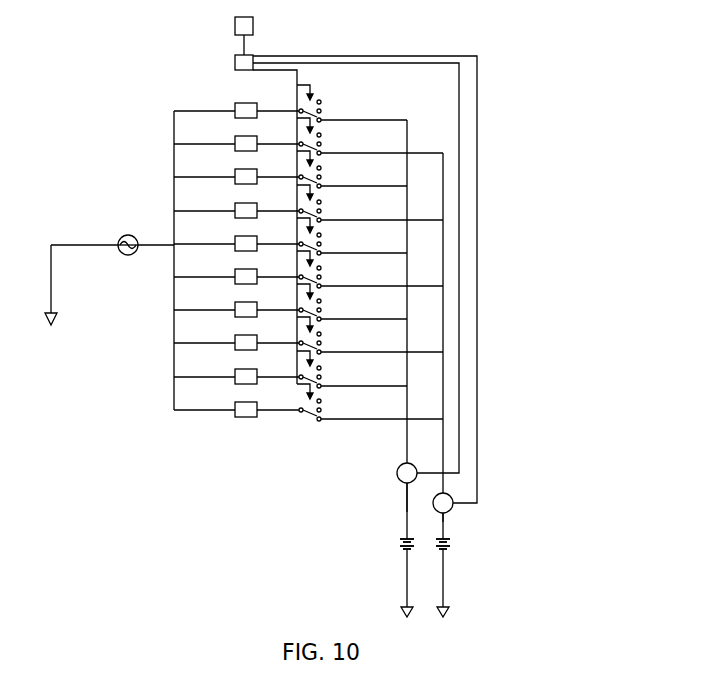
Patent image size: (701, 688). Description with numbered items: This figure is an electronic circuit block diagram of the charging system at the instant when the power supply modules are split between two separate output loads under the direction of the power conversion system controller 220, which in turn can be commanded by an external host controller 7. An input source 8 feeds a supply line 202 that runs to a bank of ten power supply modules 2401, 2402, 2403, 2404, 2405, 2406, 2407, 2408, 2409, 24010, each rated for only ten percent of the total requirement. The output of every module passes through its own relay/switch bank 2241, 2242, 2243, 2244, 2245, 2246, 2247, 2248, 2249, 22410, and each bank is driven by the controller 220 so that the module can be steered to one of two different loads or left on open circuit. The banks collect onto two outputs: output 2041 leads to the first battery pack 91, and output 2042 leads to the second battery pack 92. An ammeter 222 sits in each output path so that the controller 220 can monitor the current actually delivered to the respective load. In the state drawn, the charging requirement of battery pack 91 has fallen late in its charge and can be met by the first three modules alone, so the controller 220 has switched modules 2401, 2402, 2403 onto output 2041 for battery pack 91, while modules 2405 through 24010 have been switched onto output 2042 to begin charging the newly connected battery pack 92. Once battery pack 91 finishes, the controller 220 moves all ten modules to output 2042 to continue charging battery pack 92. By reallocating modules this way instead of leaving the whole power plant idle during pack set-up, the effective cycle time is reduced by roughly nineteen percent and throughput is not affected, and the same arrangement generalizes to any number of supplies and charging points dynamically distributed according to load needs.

The controller 7 is at (253, 26).
The controller 220 is at (235, 60).
The power supply module 2401 is at (242, 104).
The power supply module 2402 is at (242, 137).
The power supply module 2403 is at (242, 170).
The power supply module 2404 is at (242, 204).
The power supply module 2405 is at (242, 237).
The power supply module 2406 is at (242, 270).
The power supply module 2407 is at (242, 303).
The power supply module 2408 is at (242, 336).
The power supply module 2409 is at (242, 370).
The power supply module 24010 is at (242, 403).
The relay/switch bank 2241 is at (322, 108).
The relay/switch bank 2242 is at (322, 141).
The relay/switch bank 2243 is at (322, 174).
The relay/switch bank 2244 is at (322, 208).
The relay/switch bank 2245 is at (322, 241).
The relay/switch bank 2246 is at (322, 274).
The relay/switch bank 2247 is at (322, 307).
The relay/switch bank 2248 is at (322, 340).
The relay/switch bank 2249 is at (322, 374).
The relay/switch bank 22410 is at (322, 407).
The AC power source 8 is at (118, 243).
The power supply line 202 is at (152, 250).
The ammeter 222 is at (397, 473).
The output 2042 is at (407, 512).
The output 2041 is at (443, 520).
The battery pack 92 is at (400, 543).
The battery pack 91 is at (447, 552).